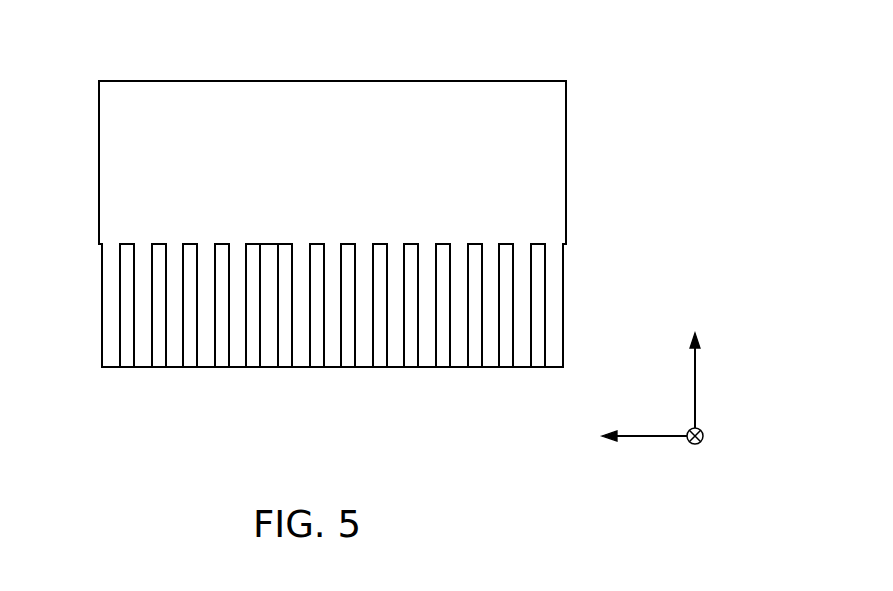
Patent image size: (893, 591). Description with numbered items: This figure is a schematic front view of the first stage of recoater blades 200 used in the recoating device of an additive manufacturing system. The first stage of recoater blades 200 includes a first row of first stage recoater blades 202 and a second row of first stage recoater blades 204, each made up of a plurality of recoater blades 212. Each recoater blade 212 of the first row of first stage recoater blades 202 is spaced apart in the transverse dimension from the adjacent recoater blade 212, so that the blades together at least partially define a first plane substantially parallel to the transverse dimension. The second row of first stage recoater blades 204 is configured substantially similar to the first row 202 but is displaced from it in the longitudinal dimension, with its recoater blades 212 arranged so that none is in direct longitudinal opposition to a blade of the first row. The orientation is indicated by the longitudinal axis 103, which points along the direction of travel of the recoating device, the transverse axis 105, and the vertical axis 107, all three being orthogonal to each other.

The first stage of recoater blades 200 is at (333, 73).
The first row of first stage recoater blades 202 is at (113, 167).
The second row of first stage recoater blades 204 is at (155, 370).
The recoater blade 212 is at (283, 370).
The longitudinal axis 103 is at (703, 439).
The transverse axis 105 is at (645, 440).
The vertical axis 107 is at (697, 383).